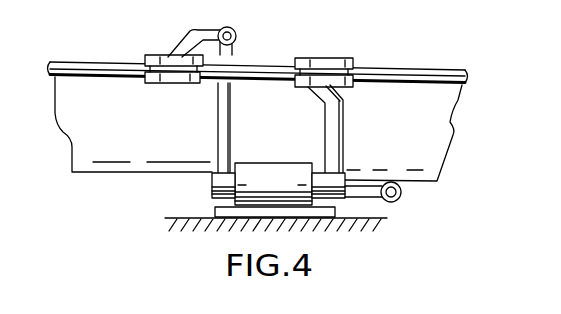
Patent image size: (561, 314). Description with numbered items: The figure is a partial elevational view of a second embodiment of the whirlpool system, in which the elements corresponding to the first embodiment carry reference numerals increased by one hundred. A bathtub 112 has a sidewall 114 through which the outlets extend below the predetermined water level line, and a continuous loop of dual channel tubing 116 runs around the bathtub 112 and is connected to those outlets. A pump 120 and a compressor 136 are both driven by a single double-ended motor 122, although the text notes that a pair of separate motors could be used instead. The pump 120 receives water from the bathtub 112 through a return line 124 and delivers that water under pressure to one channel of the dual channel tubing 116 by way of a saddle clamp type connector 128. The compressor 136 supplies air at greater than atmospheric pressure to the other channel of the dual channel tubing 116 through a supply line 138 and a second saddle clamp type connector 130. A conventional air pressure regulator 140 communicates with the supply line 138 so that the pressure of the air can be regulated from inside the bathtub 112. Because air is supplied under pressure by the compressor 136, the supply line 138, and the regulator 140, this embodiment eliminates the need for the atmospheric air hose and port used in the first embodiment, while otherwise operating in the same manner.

The bathtub 112 is at (452, 122).
The sidewall 114 is at (294, 126).
The dual channel tubing 116 is at (383, 68).
The pump 120 is at (345, 197).
The double-ended motor 122 is at (290, 191).
The return line 124 is at (363, 190).
The saddle clamp type connector 128 is at (313, 58).
The saddle clamp type connector 130 is at (153, 55).
The compressor 136 is at (213, 185).
The supply line 138 is at (219, 131).
The air pressure regulator 140 is at (235, 36).